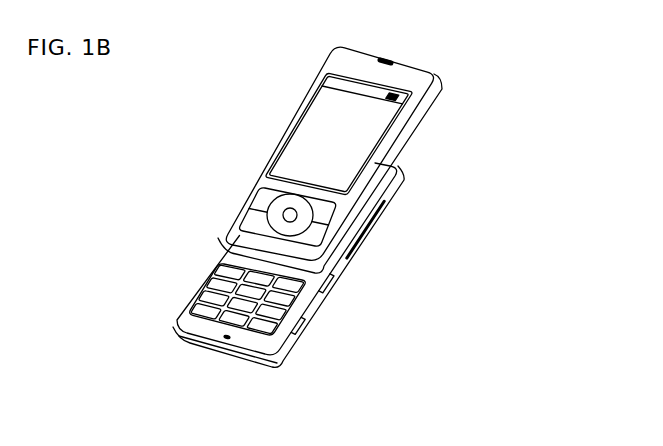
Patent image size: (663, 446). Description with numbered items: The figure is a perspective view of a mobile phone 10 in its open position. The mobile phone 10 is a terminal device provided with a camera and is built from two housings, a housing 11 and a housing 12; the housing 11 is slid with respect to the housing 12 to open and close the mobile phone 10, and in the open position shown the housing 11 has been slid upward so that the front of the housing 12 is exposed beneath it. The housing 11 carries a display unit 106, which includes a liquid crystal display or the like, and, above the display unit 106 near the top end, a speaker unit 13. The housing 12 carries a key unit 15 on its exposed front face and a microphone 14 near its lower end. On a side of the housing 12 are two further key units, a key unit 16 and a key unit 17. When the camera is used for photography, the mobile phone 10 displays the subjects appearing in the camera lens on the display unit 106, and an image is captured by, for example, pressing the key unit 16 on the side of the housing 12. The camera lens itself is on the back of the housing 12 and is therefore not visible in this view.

The mobile phone 10 is at (338, 211).
The housing 11 is at (420, 70).
The housing 12 is at (262, 348).
The speaker unit 13 is at (389, 62).
The microphone 14 is at (227, 337).
The key unit 15 is at (220, 307).
The key unit 16 is at (333, 287).
The key unit 17 is at (308, 328).
The display unit 106 is at (392, 110).